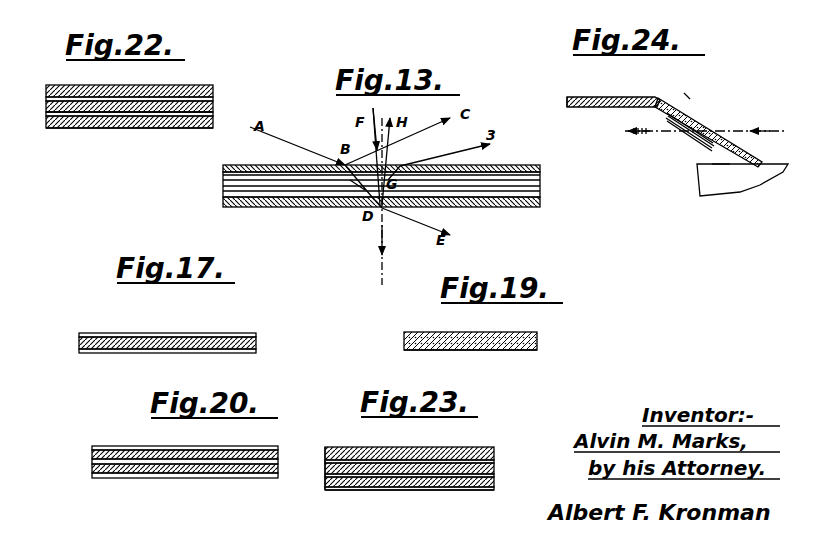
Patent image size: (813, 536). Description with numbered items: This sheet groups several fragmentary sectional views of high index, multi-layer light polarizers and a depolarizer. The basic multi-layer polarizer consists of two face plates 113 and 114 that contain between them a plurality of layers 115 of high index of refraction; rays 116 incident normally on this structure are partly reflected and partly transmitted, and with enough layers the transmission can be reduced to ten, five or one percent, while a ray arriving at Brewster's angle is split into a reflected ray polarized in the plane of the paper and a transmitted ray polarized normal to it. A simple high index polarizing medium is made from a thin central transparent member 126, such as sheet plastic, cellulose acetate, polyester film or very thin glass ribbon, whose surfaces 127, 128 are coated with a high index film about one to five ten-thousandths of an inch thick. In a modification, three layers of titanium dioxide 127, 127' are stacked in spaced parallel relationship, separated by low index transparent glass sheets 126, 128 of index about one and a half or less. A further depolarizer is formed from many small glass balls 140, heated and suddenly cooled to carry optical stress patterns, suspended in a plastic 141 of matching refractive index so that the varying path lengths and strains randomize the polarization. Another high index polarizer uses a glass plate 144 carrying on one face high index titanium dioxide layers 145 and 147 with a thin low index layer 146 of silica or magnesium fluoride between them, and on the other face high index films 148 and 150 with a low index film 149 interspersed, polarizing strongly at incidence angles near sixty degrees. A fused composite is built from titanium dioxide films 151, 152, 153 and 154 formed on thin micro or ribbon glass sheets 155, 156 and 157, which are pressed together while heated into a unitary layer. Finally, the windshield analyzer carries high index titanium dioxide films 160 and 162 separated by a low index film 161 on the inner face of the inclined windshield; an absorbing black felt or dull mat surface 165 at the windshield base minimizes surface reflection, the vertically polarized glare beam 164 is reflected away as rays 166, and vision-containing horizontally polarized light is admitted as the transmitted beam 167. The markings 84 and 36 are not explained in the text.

In FIG. 22, the high index layer 145 is at (211, 86).
In FIG. 22, the low index layer 146 is at (213, 99).
In FIG. 22, the high index layer 147 is at (213, 100).
In FIG. 22, the glass plate 144 is at (213, 113).
In FIG. 22, the high index film 148 is at (46, 118).
In FIG. 22, the low index film 149 is at (112, 120).
In FIG. 22, the high index film 150 is at (160, 128).
In FIG. 13, the face plate 113 is at (540, 165).
In FIG. 13, the layers of high index of refraction 115 is at (545, 188).
In FIG. 13, the face plate 114 is at (545, 208).
In FIG. 13, the incident rays 116 is at (372, 106).
In FIG. 24, the transmitted beam 167 is at (640, 124).
In FIG. 24, the high index titanium dioxide film 160 is at (692, 106).
In FIG. 24, the low index film 161 is at (700, 124).
In FIG. 24, the high index titanium dioxide film 162 is at (700, 140).
In FIG. 24, the beam 164 is at (770, 123).
In FIG. 24, the reflected rays 166 is at (688, 92).
In FIG. 24, the member 84 is at (600, 120).
In FIG. 24, the absorbing surface 165 is at (745, 166).
In FIG. 24, the element 36 is at (722, 163).
In FIG. 17, the high index coated surface 127 is at (182, 311).
In FIG. 20, the high index coated surface 127 is at (145, 446).
In FIG. 17, the thin central transparent member 126 is at (256, 341).
In FIG. 20, the thin central transparent member 126 is at (92, 468).
In FIG. 17, the high index coated surface 128 is at (254, 352).
In FIG. 20, the high index coated surface 128 is at (92, 458).
In FIG. 20, the titanium dioxide layer 127' is at (163, 488).
In FIG. 19, the glass balls 140 is at (490, 350).
In FIG. 19, the plastic suspending medium 141 is at (530, 351).
In FIG. 23, the high index film 151 is at (494, 449).
In FIG. 23, the high index film 152 is at (495, 461).
In FIG. 23, the high index film 153 is at (495, 472).
In FIG. 23, the thin glass sheet 156 is at (438, 478).
In FIG. 23, the high index film 154 is at (494, 480).
In FIG. 23, the thin glass sheet 155 is at (318, 455).
In FIG. 23, the thin glass sheet 157 is at (352, 480).